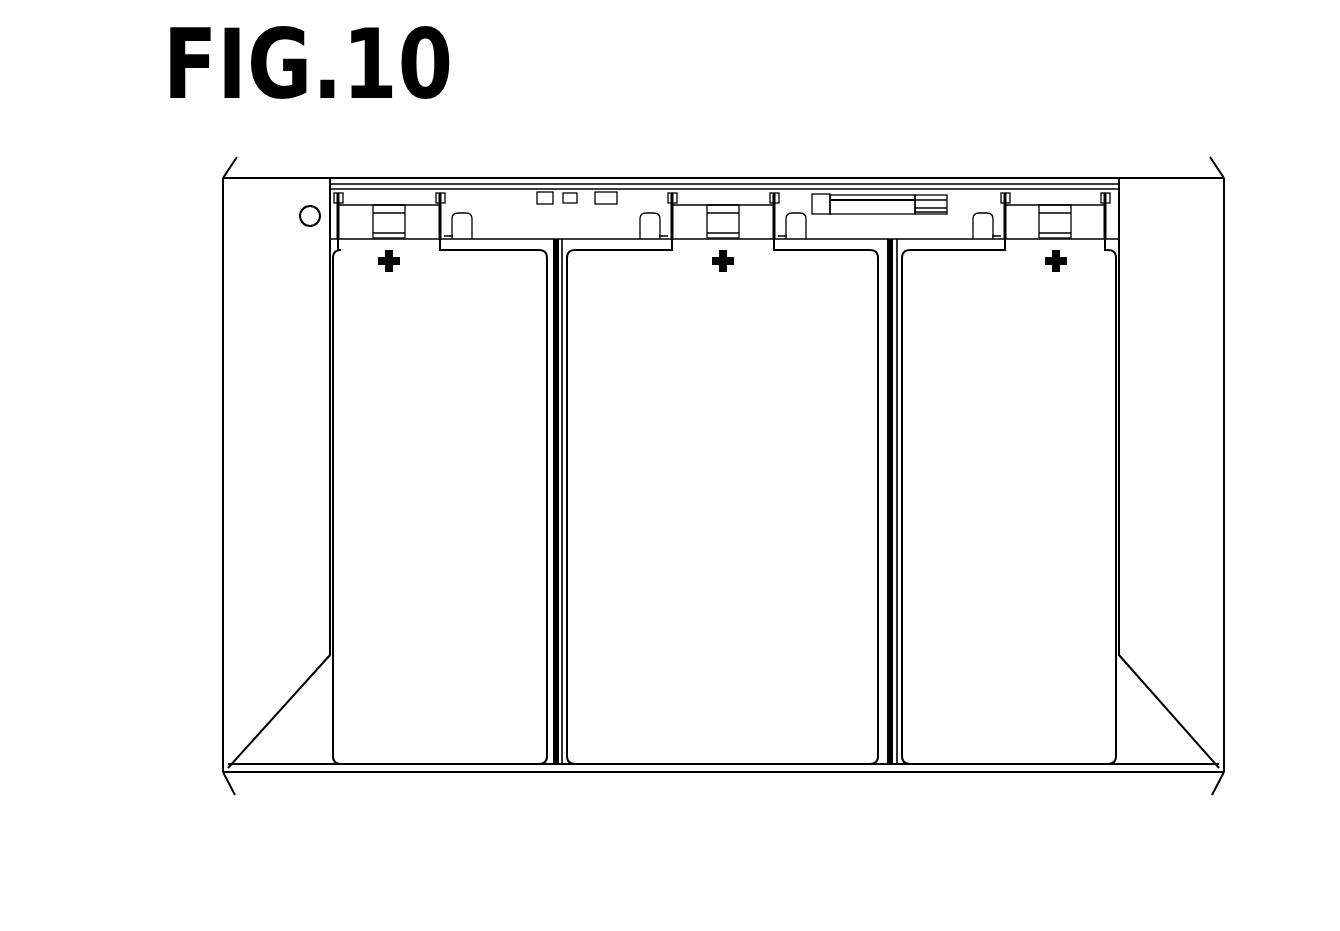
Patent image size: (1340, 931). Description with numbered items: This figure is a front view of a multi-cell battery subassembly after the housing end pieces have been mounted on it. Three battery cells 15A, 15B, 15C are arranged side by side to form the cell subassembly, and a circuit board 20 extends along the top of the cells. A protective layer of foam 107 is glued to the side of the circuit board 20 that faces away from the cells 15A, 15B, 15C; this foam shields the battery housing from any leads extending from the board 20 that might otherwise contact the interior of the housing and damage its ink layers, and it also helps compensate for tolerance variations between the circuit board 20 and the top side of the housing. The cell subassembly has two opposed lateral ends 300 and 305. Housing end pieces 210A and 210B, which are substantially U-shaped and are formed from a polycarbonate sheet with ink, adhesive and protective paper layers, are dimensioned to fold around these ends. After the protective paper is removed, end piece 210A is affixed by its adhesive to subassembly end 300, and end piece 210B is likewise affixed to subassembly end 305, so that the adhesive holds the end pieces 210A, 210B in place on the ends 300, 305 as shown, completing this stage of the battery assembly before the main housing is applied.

The cell 15A is at (410, 737).
The cell 15B is at (745, 737).
The cell 15C is at (1007, 737).
The circuit board 20 is at (693, 192).
The protective layer of foam 107 is at (823, 180).
The housing end piece 210A is at (237, 442).
The housing end piece 210B is at (1205, 448).
The opposed lateral end 300 is at (237, 773).
The opposed lateral end 305 is at (1202, 775).